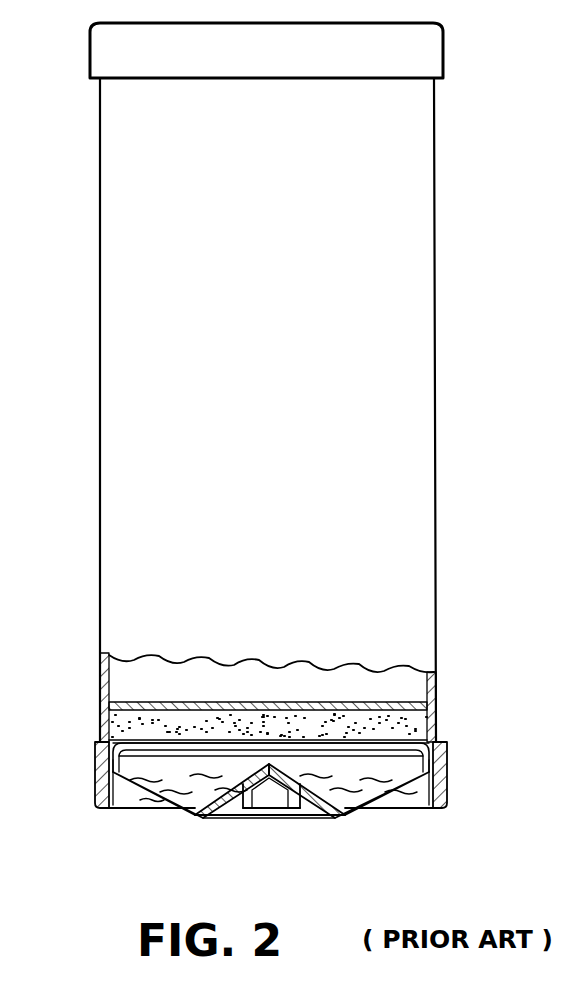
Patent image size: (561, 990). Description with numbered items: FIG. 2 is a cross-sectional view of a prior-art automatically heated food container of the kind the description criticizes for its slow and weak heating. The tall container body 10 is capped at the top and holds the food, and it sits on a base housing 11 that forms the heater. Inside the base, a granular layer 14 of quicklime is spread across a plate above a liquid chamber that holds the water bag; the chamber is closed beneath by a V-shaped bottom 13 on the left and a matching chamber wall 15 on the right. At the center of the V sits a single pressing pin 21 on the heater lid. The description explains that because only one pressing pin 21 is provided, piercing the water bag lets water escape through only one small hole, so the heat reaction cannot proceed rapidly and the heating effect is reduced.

The container body 10 is at (99, 510).
The base housing 11 is at (95, 802).
The liquid chamber bottom 13 is at (190, 798).
The granular layer 14 is at (120, 715).
The chamber wall 15 is at (365, 812).
The central post 21 is at (252, 805).